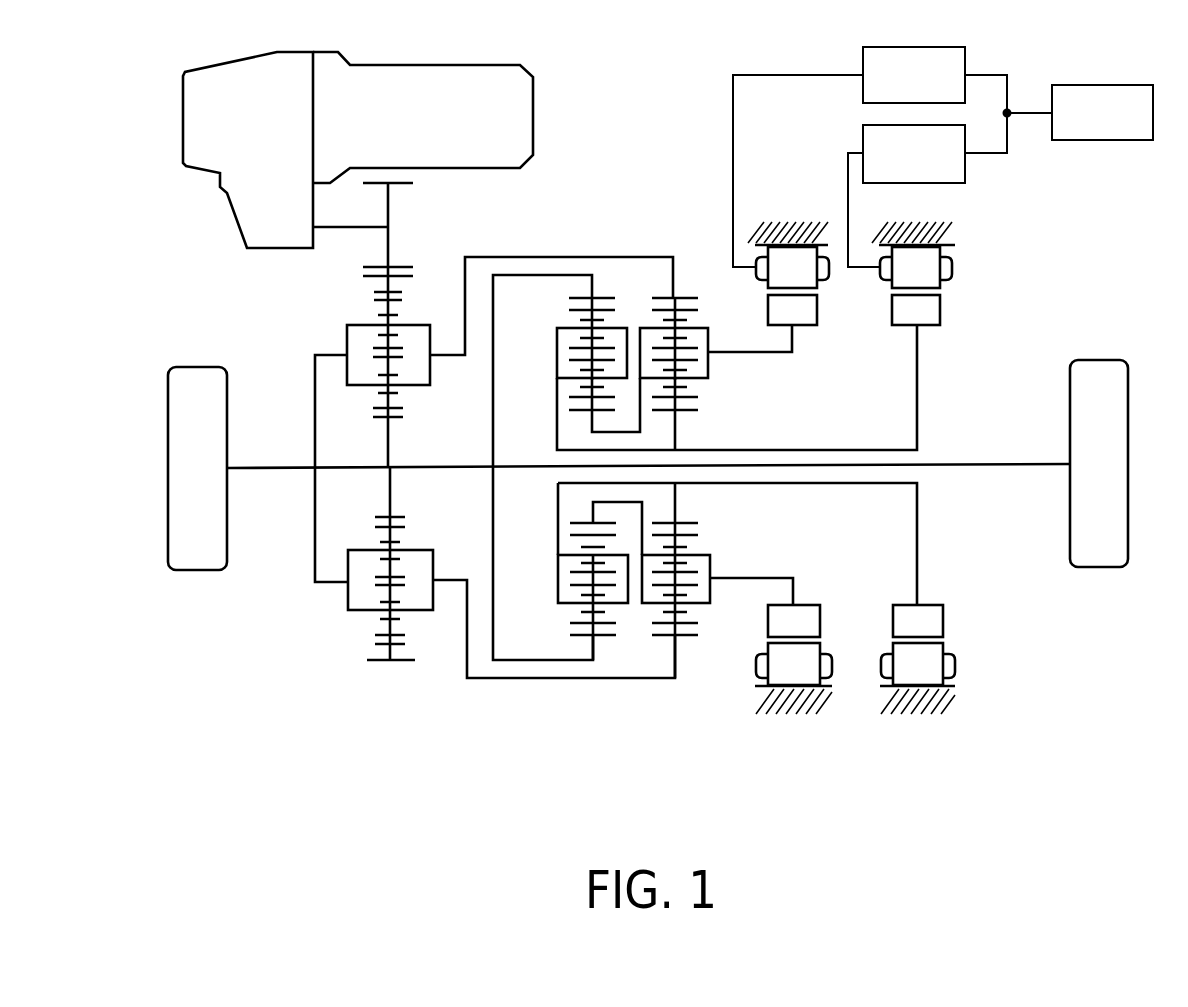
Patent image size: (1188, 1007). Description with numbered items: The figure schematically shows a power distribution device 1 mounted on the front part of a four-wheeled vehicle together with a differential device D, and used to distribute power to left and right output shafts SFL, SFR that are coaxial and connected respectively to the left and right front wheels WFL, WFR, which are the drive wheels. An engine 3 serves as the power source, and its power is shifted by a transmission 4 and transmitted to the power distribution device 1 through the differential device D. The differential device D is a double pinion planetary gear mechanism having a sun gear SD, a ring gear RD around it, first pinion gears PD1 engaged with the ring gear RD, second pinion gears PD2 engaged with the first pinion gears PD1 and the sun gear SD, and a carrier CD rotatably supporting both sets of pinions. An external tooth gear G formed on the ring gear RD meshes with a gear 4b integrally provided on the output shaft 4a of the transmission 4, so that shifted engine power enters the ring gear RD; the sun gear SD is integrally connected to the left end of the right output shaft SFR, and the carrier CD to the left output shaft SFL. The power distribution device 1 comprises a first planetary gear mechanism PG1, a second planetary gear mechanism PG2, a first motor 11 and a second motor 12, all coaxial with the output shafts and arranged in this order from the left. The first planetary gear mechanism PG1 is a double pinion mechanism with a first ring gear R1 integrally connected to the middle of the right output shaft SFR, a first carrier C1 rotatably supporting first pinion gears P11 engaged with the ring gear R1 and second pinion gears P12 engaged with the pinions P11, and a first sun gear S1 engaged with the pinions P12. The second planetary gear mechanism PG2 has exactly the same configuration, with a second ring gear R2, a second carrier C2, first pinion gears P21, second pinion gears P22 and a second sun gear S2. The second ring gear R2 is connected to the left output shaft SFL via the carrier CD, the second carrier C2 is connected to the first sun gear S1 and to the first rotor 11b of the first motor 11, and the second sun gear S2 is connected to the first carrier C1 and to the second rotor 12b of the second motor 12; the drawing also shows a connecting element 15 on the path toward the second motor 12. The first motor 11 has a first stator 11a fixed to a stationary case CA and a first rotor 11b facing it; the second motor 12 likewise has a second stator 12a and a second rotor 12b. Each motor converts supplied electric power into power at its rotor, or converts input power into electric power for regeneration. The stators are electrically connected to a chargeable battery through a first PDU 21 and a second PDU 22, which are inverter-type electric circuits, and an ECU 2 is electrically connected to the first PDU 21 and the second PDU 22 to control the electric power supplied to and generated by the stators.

The power distribution device 1 is at (630, 779).
The ECU 2 is at (1153, 110).
The engine 3 is at (432, 73).
The transmission 4 is at (190, 126).
The output shaft 4a is at (371, 226).
The gear 4b is at (403, 263).
The external tooth gear G is at (363, 277).
The ring gear RD is at (403, 292).
The first pinion gears PD1 is at (373, 300).
The second pinion gears PD2 is at (404, 415).
The differential device D is at (340, 441).
The sun gear SD is at (388, 492).
The carrier CD is at (315, 560).
The left output shaft SFL is at (272, 466).
The right output shaft SFR is at (1018, 462).
The left front wheel WFL is at (196, 372).
The right front wheel WFR is at (1095, 370).
The first planetary gear mechanism PG1 is at (705, 428).
The second planetary gear mechanism PG2 is at (716, 325).
The first ring gear R1 is at (569, 298).
The first pinion gears P11 is at (579, 313).
The first carrier C1 is at (557, 357).
The second pinion gears P12 is at (571, 398).
The first sun gear S1 is at (573, 412).
The second ring gear R2 is at (696, 299).
The first pinion gears P21 is at (699, 316).
The second carrier C2 is at (708, 365).
The second pinion gears P22 is at (699, 400).
The second sun gear S2 is at (696, 412).
The case CA is at (790, 226).
The first motor 11 is at (819, 331).
The first stator 11a is at (805, 267).
The first rotor 11b is at (808, 315).
The second motor 12 is at (951, 326).
The second stator 12a is at (927, 267).
The second rotor 12b is at (927, 308).
The connecting shaft 15 is at (848, 485).
The first PDU 21 is at (918, 45).
The second PDU 22 is at (965, 165).